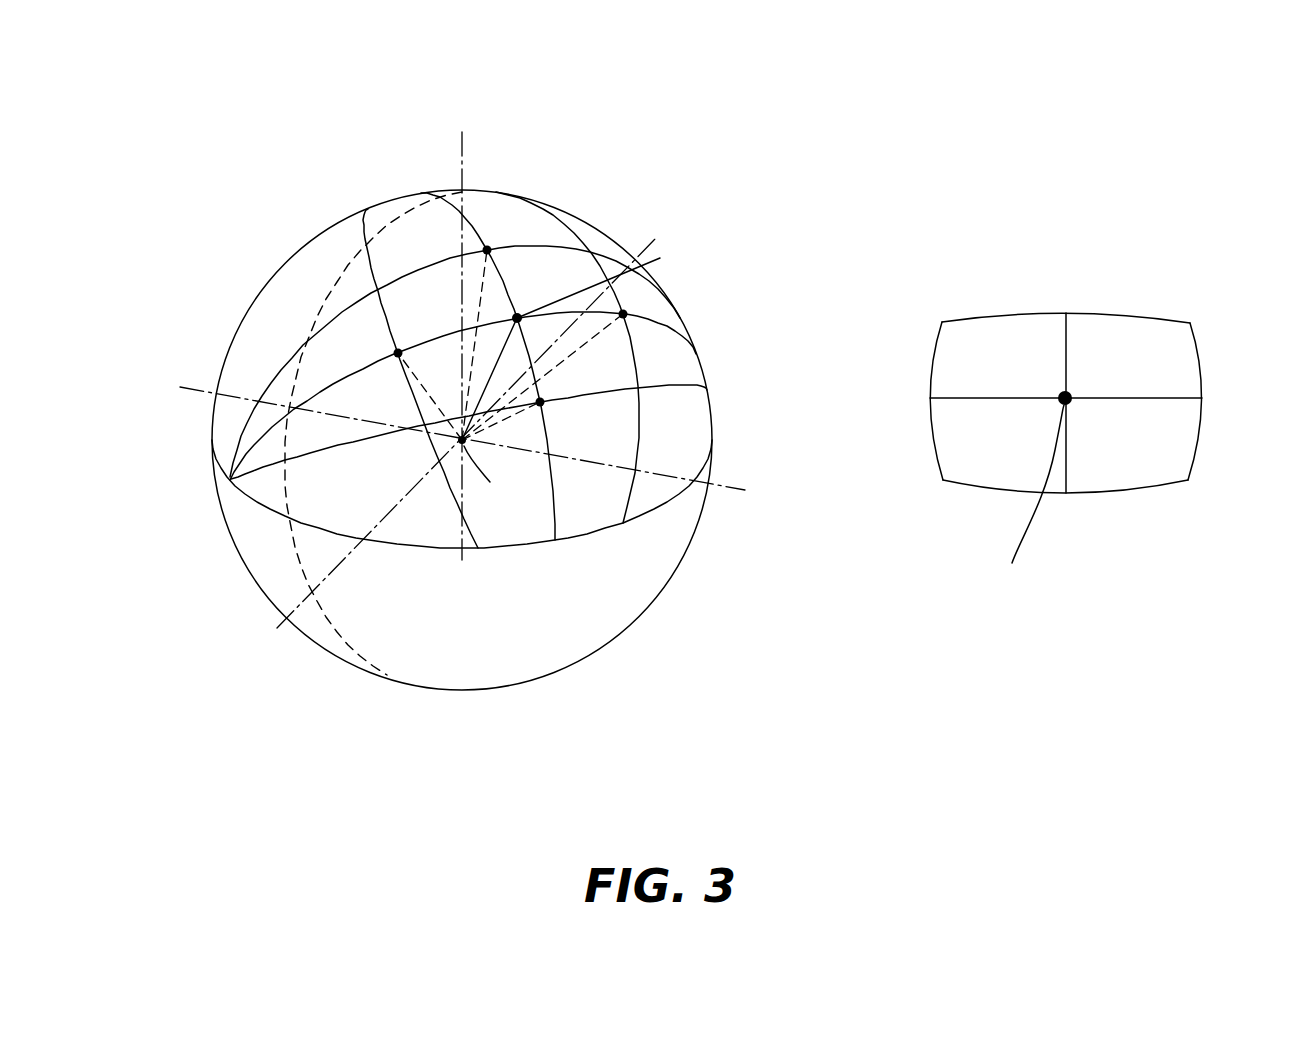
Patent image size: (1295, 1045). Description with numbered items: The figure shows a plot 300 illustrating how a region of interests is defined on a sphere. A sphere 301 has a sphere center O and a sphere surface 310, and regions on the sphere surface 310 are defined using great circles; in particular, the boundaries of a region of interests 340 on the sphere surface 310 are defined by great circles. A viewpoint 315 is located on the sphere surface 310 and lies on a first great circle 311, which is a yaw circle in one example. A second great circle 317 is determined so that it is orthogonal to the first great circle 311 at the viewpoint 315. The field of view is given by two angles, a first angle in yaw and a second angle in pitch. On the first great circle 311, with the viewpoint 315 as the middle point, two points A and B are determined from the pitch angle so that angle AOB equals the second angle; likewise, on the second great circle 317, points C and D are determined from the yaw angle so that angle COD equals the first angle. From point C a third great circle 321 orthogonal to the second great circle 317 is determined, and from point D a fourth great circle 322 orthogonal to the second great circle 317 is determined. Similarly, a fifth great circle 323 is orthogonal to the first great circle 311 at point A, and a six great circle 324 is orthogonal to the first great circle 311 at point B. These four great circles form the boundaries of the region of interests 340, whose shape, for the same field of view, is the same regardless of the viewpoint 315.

The plot 300 is at (1162, 92).
The sphere 301 is at (700, 115).
The sphere surface 310 is at (523, 198).
The first great circle 311 is at (468, 210).
The viewpoint 315 is at (660, 258).
The second great circle 317 is at (662, 314).
The third great circle 321 is at (365, 233).
The fourth great circle 322 is at (586, 232).
The fifth great circle 323 is at (429, 262).
The six great circle 324 is at (230, 480).
The region of interests 340 is at (590, 246).